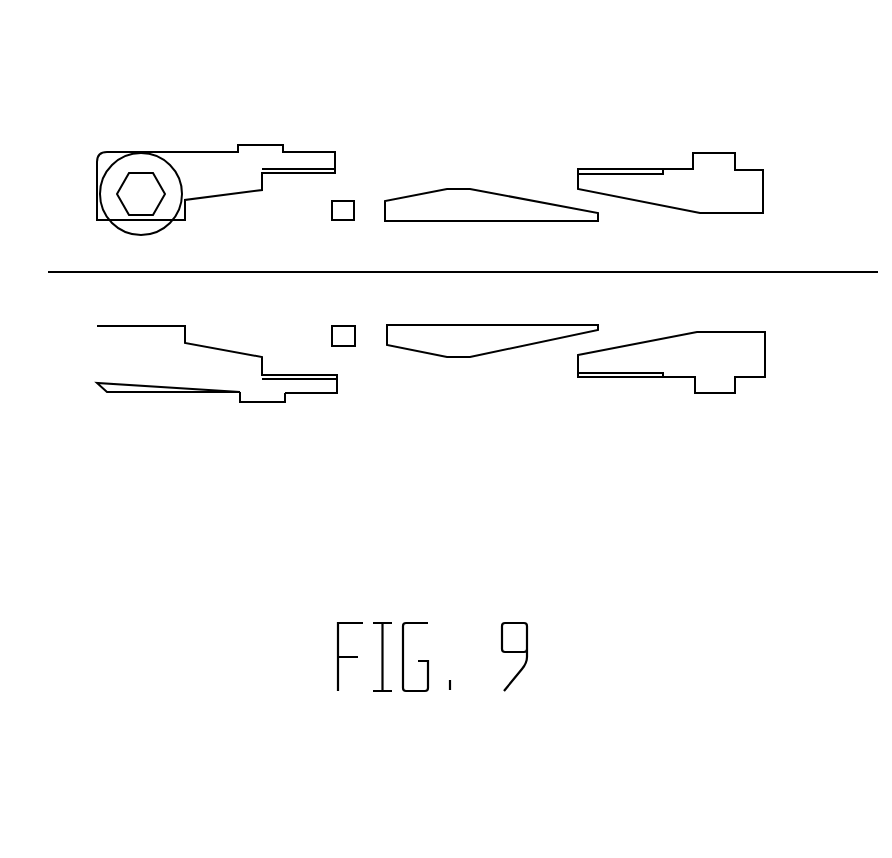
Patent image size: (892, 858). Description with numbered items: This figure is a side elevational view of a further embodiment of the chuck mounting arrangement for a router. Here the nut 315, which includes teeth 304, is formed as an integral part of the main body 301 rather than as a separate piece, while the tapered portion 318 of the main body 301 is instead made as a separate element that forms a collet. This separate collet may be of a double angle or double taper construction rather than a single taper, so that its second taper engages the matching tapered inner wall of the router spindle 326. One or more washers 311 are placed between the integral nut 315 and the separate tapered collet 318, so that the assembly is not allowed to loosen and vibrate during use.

The main body 301 is at (265, 46).
The washer 311 is at (487, 22).
The tapered portion 318 is at (660, 53).
The teeth 304 is at (415, 408).
The nut 315 is at (338, 468).
The router spindle 326 is at (617, 465).